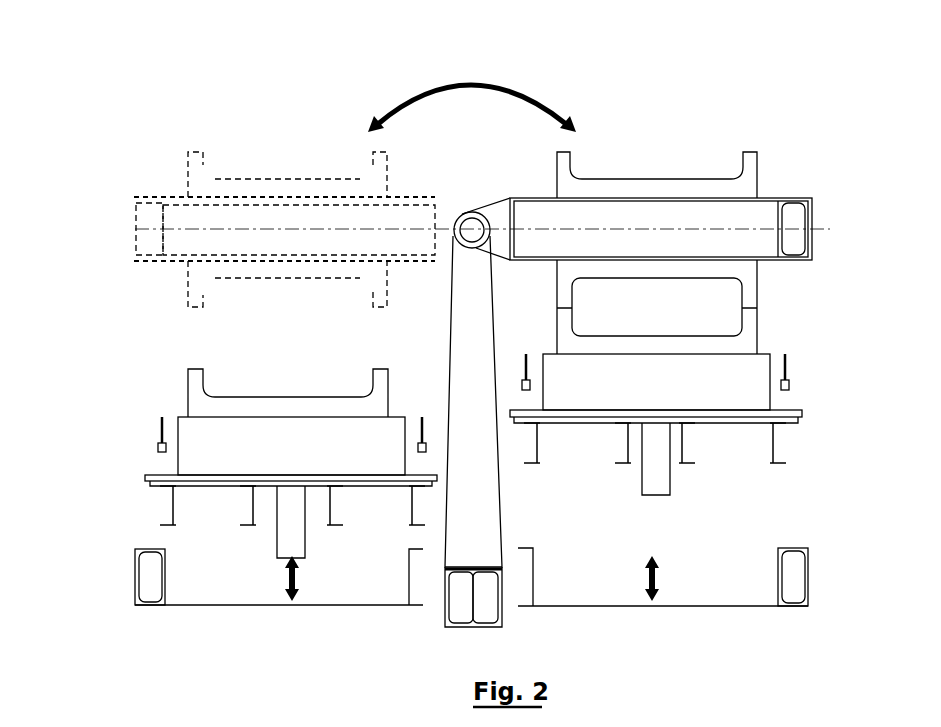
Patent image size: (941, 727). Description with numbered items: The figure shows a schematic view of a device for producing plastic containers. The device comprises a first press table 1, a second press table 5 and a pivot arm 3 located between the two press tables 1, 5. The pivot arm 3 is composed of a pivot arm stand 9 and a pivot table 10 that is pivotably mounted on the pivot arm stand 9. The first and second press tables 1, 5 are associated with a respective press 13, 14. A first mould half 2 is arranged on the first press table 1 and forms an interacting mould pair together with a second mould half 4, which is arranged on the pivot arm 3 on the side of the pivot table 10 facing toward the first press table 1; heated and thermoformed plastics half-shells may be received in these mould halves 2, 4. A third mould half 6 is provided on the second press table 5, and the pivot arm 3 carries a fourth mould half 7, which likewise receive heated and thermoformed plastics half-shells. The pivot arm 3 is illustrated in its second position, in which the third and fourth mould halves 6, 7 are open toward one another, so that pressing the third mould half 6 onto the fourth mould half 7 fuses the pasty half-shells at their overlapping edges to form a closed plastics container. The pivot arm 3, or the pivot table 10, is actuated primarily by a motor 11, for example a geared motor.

The first press table 1 is at (225, 453).
The first mould half 2 is at (230, 407).
The pivot arm 3 is at (570, 213).
The second mould half 4 is at (698, 183).
The second press table 5 is at (698, 386).
The third mould half 6 is at (714, 342).
The fourth mould half 7 is at (718, 268).
The pivot arm stand 9 is at (480, 508).
The pivot table 10 is at (690, 212).
The motor 11 is at (458, 216).
The press 13 is at (290, 533).
The press 14 is at (655, 470).